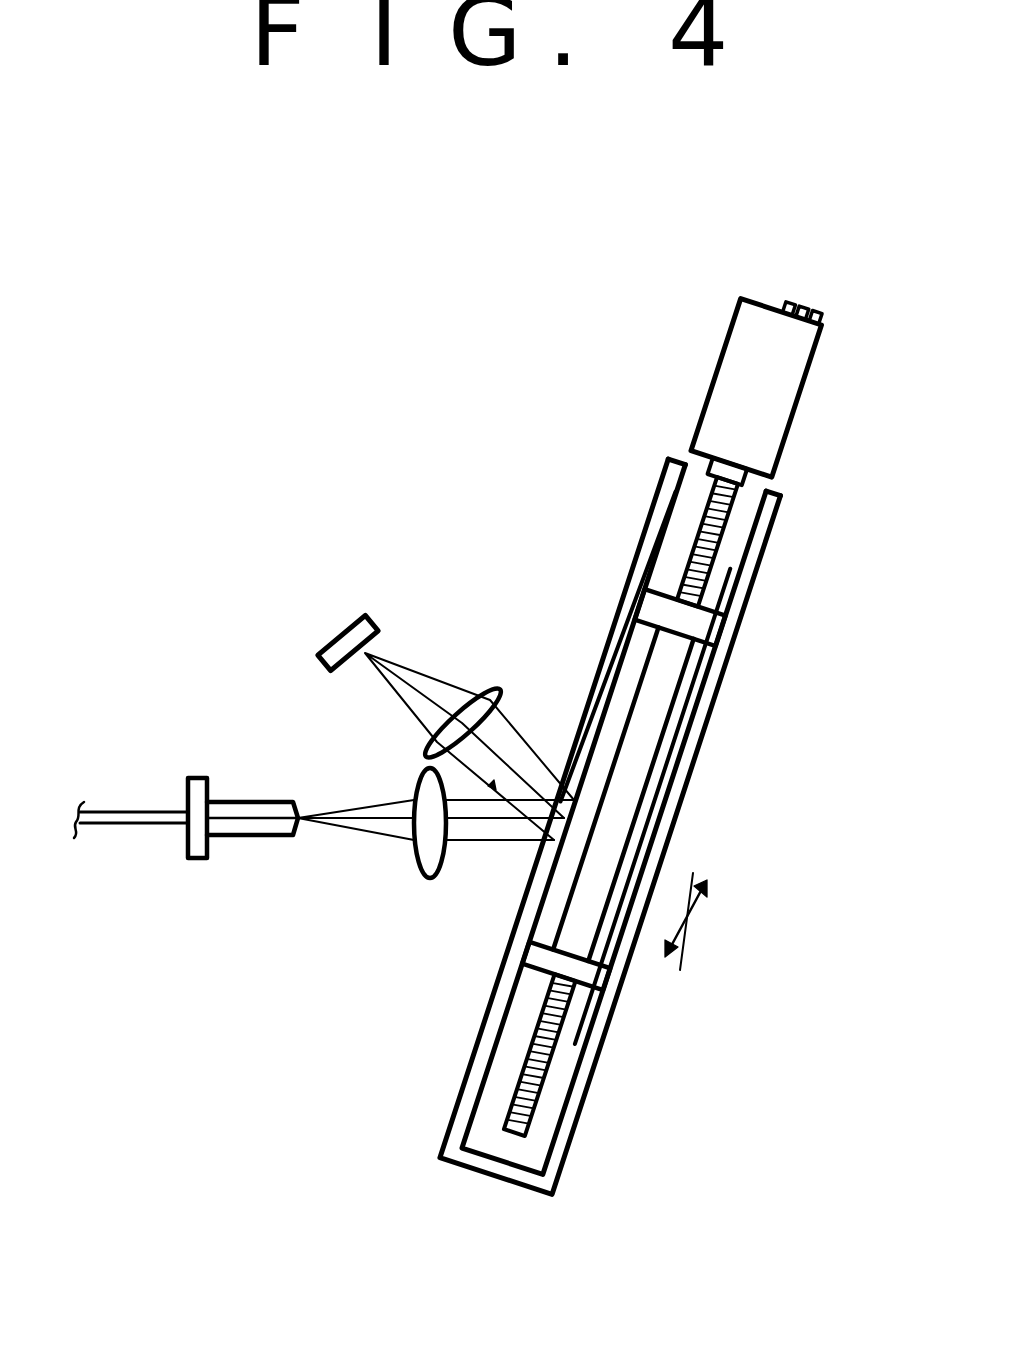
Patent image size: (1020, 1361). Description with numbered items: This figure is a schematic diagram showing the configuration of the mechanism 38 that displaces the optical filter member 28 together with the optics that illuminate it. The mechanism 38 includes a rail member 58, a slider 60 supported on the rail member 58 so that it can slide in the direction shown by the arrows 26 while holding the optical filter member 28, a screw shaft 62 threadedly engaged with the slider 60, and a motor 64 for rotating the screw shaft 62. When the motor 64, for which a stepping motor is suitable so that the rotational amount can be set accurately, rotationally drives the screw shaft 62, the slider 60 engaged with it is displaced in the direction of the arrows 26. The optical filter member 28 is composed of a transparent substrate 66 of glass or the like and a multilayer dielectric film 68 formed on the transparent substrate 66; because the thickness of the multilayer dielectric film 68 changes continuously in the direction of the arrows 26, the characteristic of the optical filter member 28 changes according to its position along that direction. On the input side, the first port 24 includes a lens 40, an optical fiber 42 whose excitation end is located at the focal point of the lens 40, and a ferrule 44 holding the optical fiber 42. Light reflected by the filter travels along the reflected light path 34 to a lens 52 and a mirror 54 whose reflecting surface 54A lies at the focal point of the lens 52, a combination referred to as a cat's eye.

The first port 24 is at (196, 866).
The arrows 26 is at (672, 913).
The optical filter member 28 is at (668, 760).
The reflected light path 34 is at (523, 758).
The mechanism 38 is at (724, 316).
The lens 40 is at (432, 878).
The optical fiber 42 is at (142, 812).
The ferrule 44 is at (253, 833).
The lens 52 is at (425, 746).
The mirror 54 is at (340, 636).
The reflecting surface 54A is at (378, 640).
The rail member 58 is at (572, 1112).
The slider 60 is at (700, 660).
The screw shaft 62 is at (734, 520).
The motor 64 is at (790, 386).
The transparent substrate 66 is at (640, 796).
The multilayer dielectric film 68 is at (610, 690).